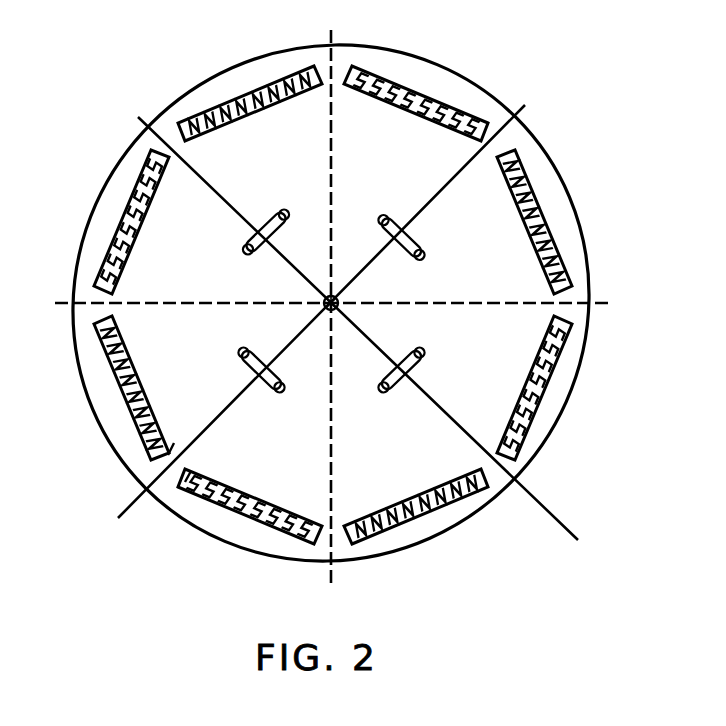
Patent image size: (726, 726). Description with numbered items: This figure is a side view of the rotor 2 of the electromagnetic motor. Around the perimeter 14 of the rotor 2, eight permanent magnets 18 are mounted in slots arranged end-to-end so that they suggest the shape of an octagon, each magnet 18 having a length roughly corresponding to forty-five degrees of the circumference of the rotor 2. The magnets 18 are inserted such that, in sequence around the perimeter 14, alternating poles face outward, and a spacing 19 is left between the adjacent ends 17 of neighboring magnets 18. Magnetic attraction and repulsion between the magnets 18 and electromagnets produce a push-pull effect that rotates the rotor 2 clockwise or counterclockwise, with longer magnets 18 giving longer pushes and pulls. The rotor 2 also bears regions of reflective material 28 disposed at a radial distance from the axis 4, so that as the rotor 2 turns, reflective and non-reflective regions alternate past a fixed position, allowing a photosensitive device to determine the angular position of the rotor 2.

The rotor 2 is at (125, 160).
The perimeter 14 is at (203, 97).
The magnets 18 is at (243, 95).
The reflective material 28 is at (382, 213).
The axis 4 is at (325, 300).
The adjacent ends 17 is at (168, 455).
The spacing 19 is at (155, 475).